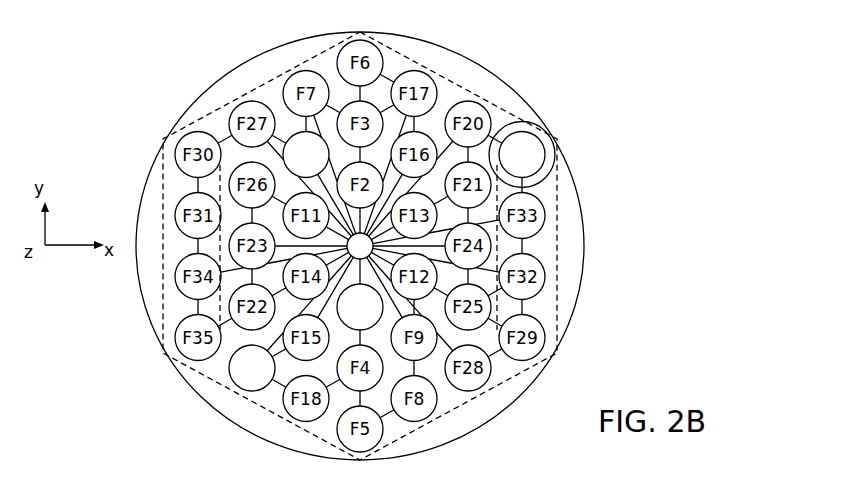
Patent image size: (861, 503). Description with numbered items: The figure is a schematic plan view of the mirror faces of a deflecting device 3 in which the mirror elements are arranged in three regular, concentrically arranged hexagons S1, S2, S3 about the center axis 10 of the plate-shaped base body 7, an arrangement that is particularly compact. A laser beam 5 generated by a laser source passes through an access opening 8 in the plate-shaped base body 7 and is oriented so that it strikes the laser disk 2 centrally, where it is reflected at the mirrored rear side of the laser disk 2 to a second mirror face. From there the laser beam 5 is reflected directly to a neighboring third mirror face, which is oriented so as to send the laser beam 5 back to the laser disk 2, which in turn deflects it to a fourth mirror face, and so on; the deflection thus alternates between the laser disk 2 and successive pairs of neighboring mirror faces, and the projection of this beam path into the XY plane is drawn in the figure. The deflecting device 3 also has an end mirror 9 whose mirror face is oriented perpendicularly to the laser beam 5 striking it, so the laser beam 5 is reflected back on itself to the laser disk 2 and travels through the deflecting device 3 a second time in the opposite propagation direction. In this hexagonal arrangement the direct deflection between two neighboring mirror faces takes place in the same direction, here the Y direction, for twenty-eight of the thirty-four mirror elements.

The laser disk 2 is at (347, 252).
The deflecting device 3 is at (552, 71).
The laser beam 5 is at (273, 392).
The plate-shaped base body 7 is at (193, 388).
The access opening 8 is at (384, 312).
The end mirror 9 is at (544, 132).
The center axis 10 is at (305, 113).
The first hexagon S1 is at (443, 112).
The second hexagon S2 is at (385, 93).
The third hexagon S3 is at (213, 127).